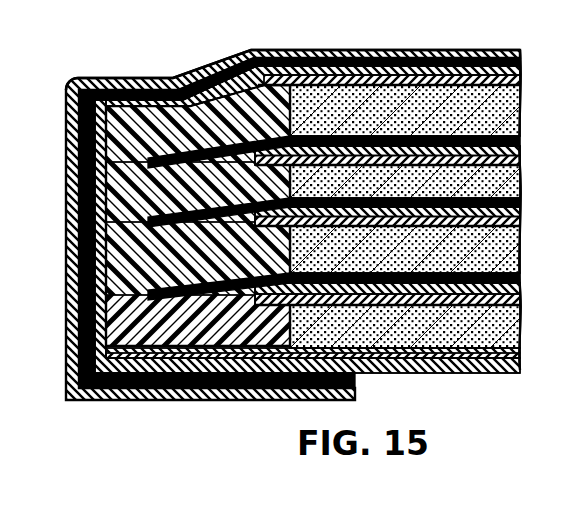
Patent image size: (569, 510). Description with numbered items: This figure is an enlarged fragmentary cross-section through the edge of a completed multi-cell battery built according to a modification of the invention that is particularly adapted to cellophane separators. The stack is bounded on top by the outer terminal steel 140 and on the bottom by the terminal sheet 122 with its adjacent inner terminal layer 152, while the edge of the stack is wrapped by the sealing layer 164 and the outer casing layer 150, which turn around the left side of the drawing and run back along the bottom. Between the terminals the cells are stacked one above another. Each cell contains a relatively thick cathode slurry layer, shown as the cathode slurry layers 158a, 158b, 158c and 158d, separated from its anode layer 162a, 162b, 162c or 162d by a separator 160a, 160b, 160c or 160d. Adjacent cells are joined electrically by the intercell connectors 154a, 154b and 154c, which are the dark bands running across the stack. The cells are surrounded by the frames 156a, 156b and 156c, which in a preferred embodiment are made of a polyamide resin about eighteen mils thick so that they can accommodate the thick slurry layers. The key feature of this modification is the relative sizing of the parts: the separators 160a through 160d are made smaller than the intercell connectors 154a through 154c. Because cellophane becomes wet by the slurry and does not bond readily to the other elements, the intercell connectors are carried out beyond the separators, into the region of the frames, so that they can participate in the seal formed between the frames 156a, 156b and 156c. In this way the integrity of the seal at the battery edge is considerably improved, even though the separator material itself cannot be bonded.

The outer terminal steel 140 is at (512, 42).
The anode layer 162d is at (512, 55).
The separator 160d is at (512, 77).
The cathode slurry layer 158d is at (512, 100).
The intercell connector 154c is at (512, 133).
The anode layer 162c is at (512, 147).
The separator 160c is at (512, 157).
The cathode slurry layer 158c is at (512, 180).
The intercell connector 154b is at (512, 194).
The anode layer 162b is at (512, 208).
The separator 160b is at (512, 218).
The cathode slurry layer 158b is at (512, 250).
The intercell connector 154a is at (512, 270).
The anode layer 162a is at (512, 286).
The separator 160a is at (512, 297).
The cathode slurry layer 158a is at (512, 323).
The inner terminal layer 152 is at (512, 345).
The terminal sheet 122 is at (512, 357).
The sealing layer 164 is at (347, 372).
The outer casing layer 150 is at (347, 386).
The frame 156a is at (130, 125).
The frame 156b is at (140, 252).
The frame 156c is at (140, 187).